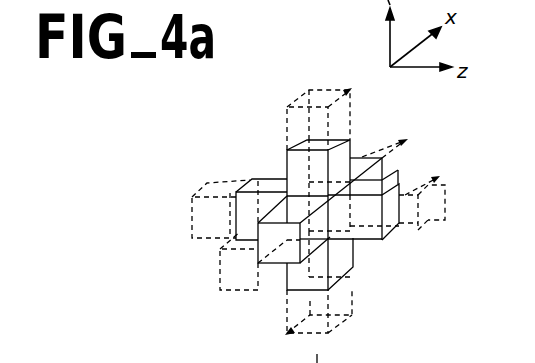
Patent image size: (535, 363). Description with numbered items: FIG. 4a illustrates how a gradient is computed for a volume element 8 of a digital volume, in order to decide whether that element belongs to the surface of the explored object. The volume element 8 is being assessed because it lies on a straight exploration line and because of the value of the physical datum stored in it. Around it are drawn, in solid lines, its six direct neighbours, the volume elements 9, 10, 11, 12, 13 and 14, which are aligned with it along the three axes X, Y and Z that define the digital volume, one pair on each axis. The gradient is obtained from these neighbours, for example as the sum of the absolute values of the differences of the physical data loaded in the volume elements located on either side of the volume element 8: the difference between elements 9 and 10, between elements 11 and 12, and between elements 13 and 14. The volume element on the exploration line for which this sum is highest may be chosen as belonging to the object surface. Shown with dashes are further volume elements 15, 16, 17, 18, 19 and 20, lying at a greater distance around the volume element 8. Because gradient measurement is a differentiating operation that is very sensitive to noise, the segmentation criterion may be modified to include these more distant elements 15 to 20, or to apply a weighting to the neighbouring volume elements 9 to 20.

The volume element 8 is at (338, 213).
The direct neighbour volume element 9 is at (383, 158).
The direct neighbour volume element 10 is at (245, 222).
The direct neighbour volume element 11 is at (282, 178).
The direct neighbour volume element 12 is at (400, 170).
The direct neighbour volume element 13 is at (352, 139).
The direct neighbour volume element 14 is at (355, 267).
The distant neighbouring volume element 15 is at (412, 148).
The distant neighbouring volume element 16 is at (237, 283).
The distant neighbouring volume element 17 is at (206, 186).
The distant neighbouring volume element 18 is at (440, 177).
The distant neighbouring volume element 19 is at (331, 91).
The distant neighbouring volume element 20 is at (350, 298).